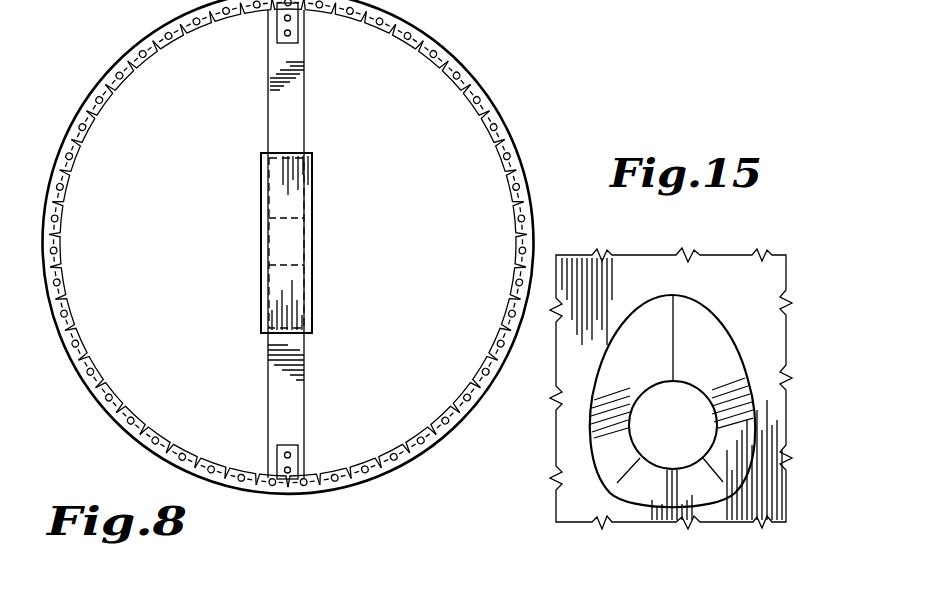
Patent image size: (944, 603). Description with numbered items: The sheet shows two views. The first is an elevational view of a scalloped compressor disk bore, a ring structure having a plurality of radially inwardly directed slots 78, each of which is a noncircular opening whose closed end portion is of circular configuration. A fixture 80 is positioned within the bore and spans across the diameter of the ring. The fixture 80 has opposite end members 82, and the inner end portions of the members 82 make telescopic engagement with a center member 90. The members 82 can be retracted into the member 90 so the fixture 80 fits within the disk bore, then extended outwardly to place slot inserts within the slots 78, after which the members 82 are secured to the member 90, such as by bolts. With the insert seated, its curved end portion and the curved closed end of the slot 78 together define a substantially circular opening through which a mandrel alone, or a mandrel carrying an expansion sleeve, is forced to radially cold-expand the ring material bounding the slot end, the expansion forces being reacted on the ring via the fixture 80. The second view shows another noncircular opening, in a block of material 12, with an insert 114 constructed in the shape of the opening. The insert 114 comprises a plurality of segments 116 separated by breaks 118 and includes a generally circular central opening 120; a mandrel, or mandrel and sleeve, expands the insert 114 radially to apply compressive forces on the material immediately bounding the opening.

In FIG. 8, the slot 78 is at (421, 50).
In FIG. 8, the end member 82 is at (280, 63).
In FIG. 8, the fixture 80 is at (318, 158).
In FIG. 8, the center member 90 is at (297, 306).
In FIG. 15, the block 12 is at (575, 346).
In FIG. 15, the insert 114 is at (587, 380).
In FIG. 15, the central opening 120 is at (662, 422).
In FIG. 15, the segment 116 is at (640, 322).
In FIG. 15, the break 118 is at (677, 318).